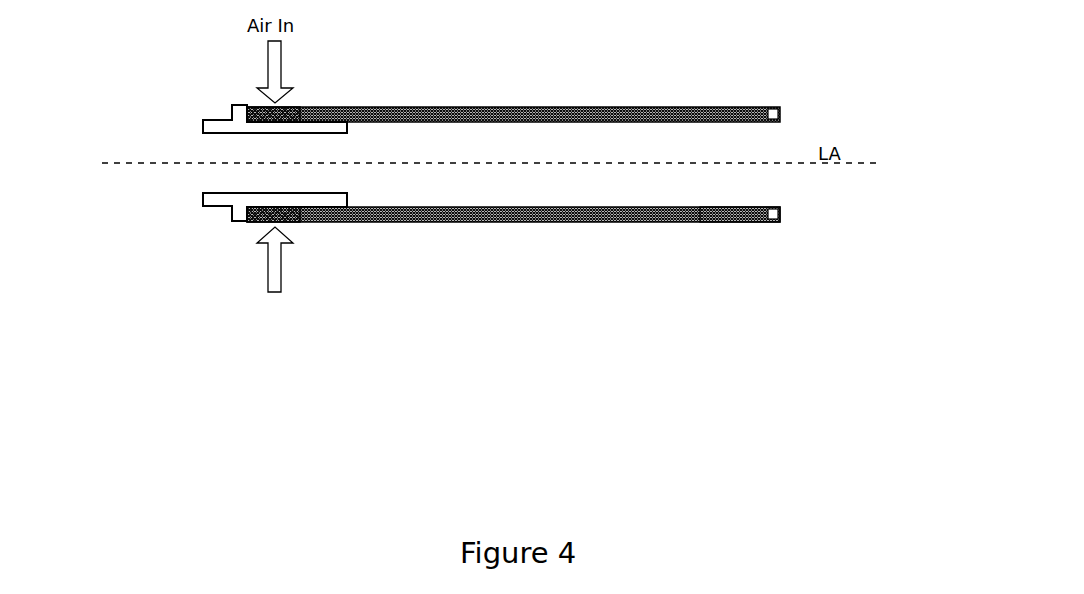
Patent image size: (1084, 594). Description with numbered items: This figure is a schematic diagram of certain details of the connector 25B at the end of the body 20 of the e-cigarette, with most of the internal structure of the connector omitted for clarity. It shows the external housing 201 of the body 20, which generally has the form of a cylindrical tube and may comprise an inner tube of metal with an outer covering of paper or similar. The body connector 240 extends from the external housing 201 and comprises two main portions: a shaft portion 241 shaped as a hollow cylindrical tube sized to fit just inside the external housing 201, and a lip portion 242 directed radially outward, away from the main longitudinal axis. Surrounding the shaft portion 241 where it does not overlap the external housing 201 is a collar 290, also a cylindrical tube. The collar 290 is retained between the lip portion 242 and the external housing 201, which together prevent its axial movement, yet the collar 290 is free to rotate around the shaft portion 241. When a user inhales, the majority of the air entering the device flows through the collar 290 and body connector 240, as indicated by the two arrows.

The body 20 is at (464, 208).
The connector 25B is at (223, 313).
The external housing 201 is at (725, 227).
The body connector 240 is at (225, 131).
The shaft portion 241 is at (330, 206).
The lip portion 242 is at (228, 223).
The collar 290 is at (305, 98).